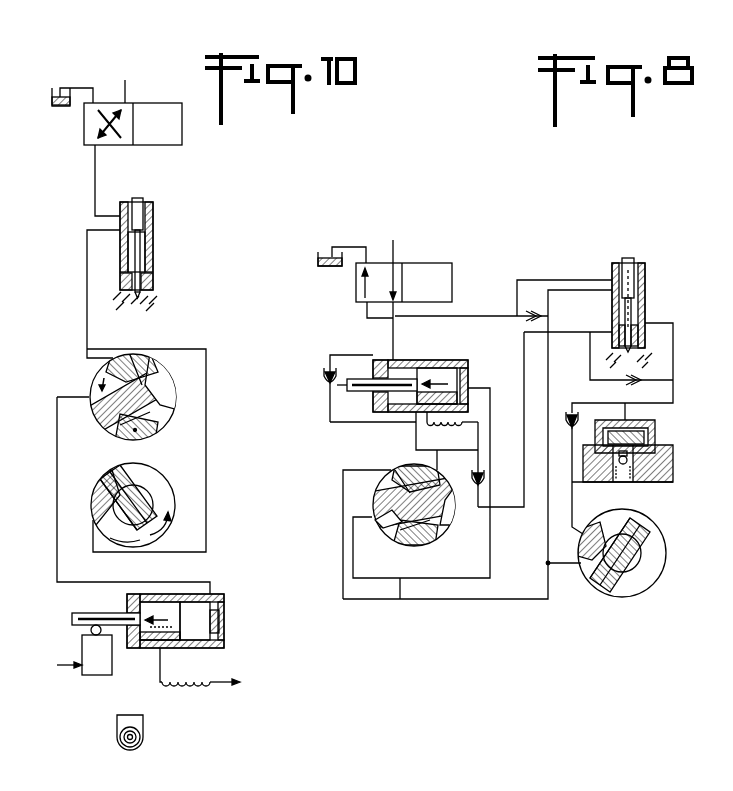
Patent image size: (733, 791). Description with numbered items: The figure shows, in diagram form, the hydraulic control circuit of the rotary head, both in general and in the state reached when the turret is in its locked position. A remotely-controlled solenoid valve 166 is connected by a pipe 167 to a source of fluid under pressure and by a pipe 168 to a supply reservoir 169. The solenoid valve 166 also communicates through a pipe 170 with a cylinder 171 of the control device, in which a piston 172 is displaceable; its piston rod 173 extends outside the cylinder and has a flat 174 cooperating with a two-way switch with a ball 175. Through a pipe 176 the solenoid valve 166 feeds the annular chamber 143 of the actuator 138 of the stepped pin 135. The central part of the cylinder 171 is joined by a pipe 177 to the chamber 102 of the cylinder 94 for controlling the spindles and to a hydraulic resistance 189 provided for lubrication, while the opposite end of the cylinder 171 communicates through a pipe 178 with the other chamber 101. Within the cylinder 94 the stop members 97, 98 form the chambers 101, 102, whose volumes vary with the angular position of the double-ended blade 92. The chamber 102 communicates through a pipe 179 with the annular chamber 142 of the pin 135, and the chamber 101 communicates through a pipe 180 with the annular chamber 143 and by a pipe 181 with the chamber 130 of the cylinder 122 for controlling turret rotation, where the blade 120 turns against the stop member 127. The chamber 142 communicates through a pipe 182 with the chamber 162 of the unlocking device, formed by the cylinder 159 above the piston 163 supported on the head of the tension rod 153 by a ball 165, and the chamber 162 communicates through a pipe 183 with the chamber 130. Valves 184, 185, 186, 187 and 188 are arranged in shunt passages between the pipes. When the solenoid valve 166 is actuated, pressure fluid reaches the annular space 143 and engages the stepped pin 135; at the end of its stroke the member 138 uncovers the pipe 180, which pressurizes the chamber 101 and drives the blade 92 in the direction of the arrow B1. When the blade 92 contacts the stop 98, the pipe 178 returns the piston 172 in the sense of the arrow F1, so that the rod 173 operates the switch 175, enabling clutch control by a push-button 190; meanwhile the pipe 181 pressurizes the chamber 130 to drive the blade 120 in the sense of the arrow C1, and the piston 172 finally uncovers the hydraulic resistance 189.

In FIG. 10, the double-ended blade 92 is at (160, 386).
In FIG. 8, the double-ended blade 92 is at (445, 527).
In FIG. 8, the cylinder 94 is at (390, 537).
In FIG. 10, the stop member 97 is at (138, 389).
In FIG. 8, the stop member 97 is at (417, 509).
In FIG. 10, the stop member 98 is at (120, 438).
In FIG. 8, the stop member 98 is at (402, 548).
In FIG. 10, the fluid chamber 101 is at (98, 387).
In FIG. 8, the fluid chamber 101 is at (378, 521).
In FIG. 10, the fluid chamber 102 is at (170, 414).
In FIG. 8, the fluid chamber 102 is at (447, 493).
In FIG. 10, the blade 120 is at (102, 477).
In FIG. 8, the blade 120 is at (597, 591).
In FIG. 8, the cylinder 122 is at (665, 563).
In FIG. 8, the stop member 127 is at (572, 566).
In FIG. 10, the chamber 130 is at (104, 495).
In FIG. 8, the chamber 130 is at (647, 578).
In FIG. 10, the stepped pin 135 is at (156, 283).
In FIG. 8, the stepped pin 135 is at (648, 333).
In FIG. 8, the actuator 138 is at (647, 283).
In FIG. 10, the annular chamber 142 is at (157, 271).
In FIG. 8, the annular chamber 142 is at (612, 325).
In FIG. 10, the annular chamber 143 is at (165, 251).
In FIG. 8, the annular chamber 143 is at (644, 297).
In FIG. 8, the tension rod 153 is at (627, 484).
In FIG. 8, the cylinder 159 is at (650, 431).
In FIG. 8, the chamber 162 is at (647, 463).
In FIG. 8, the piston 163 is at (660, 441).
In FIG. 8, the ball 165 is at (640, 468).
In FIG. 10, the solenoid valve 166 is at (154, 104).
In FIG. 8, the solenoid valve 166 is at (425, 262).
In FIG. 10, the pipe 167 is at (127, 91).
In FIG. 8, the pipe 167 is at (395, 245).
In FIG. 10, the pipe 168 is at (87, 82).
In FIG. 8, the pipe 168 is at (348, 243).
In FIG. 10, the supply reservoir 169 is at (53, 108).
In FIG. 8, the supply reservoir 169 is at (330, 270).
In FIG. 8, the pipe 170 is at (390, 323).
In FIG. 10, the cylinder 171 is at (173, 631).
In FIG. 8, the cylinder 171 is at (434, 365).
In FIG. 10, the piston 172 is at (148, 648).
In FIG. 8, the piston 172 is at (446, 366).
In FIG. 10, the piston rod 173 is at (88, 613).
In FIG. 8, the piston rod 173 is at (374, 378).
In FIG. 10, the flat 174 is at (82, 623).
In FIG. 8, the flat 174 is at (353, 392).
In FIG. 10, the two-way switch 175 is at (88, 668).
In FIG. 10, the pipe 176 is at (98, 167).
In FIG. 8, the pipe 176 is at (472, 313).
In FIG. 8, the pipe 177 is at (416, 439).
In FIG. 10, the pipe 178 is at (57, 453).
In FIG. 8, the pipe 178 is at (402, 599).
In FIG. 8, the pipe 179 is at (523, 428).
In FIG. 10, the pipe 180 is at (85, 277).
In FIG. 8, the pipe 180 is at (470, 599).
In FIG. 10, the pipe 181 is at (207, 492).
In FIG. 8, the pipe 181 is at (560, 584).
In FIG. 8, the pipe 182 is at (673, 394).
In FIG. 8, the pipe 183 is at (572, 509).
In FIG. 8, the valve 184 is at (327, 370).
In FIG. 8, the valve 185 is at (482, 482).
In FIG. 8, the valve 186 is at (530, 313).
In FIG. 8, the valve 187 is at (642, 379).
In FIG. 8, the valve 188 is at (568, 412).
In FIG. 10, the hydraulic resistance 189 is at (201, 684).
In FIG. 8, the hydraulic resistance 189 is at (463, 412).
In FIG. 10, the push-button 190 is at (147, 739).
In FIG. 10, the arrow B1 is at (108, 376).
In FIG. 10, the arrow C1 is at (170, 525).
In FIG. 10, the arrow F1 is at (163, 617).
In FIG. 8, the arrow F1 is at (436, 378).